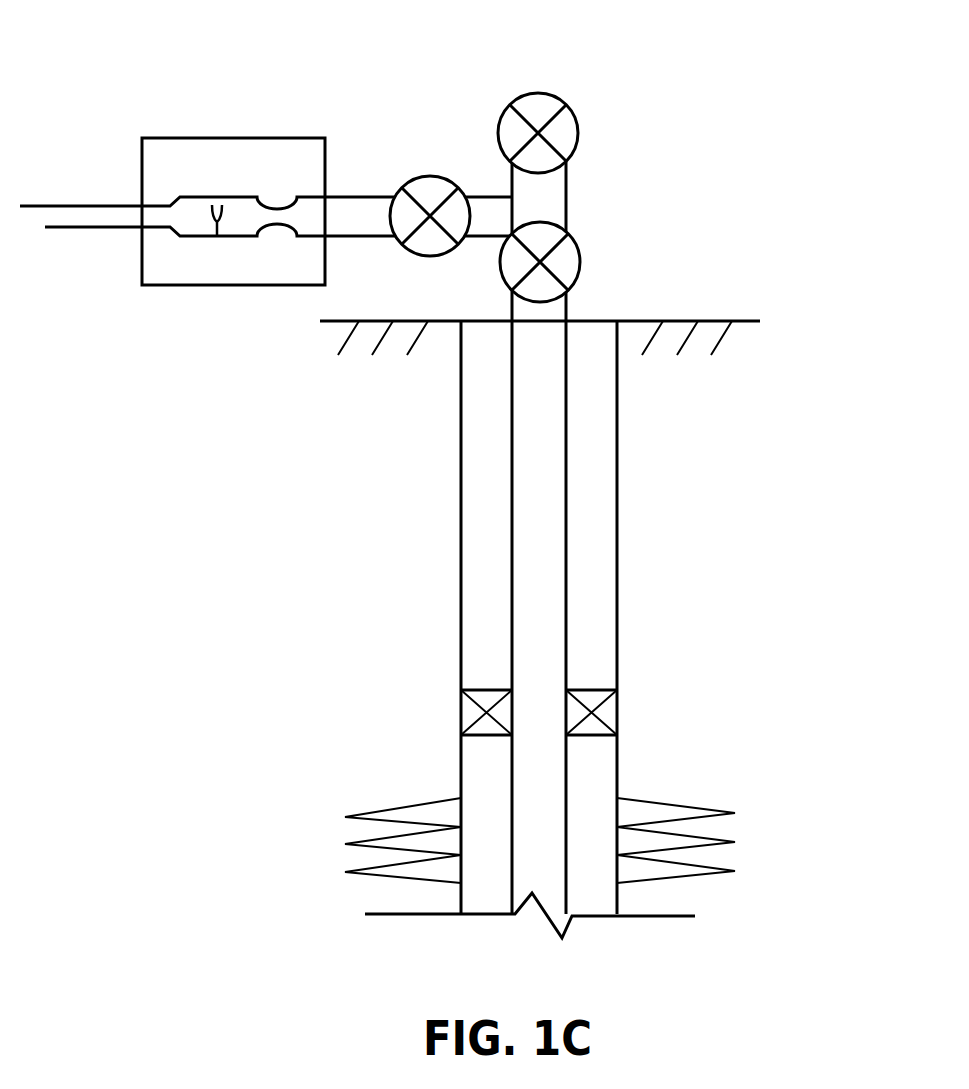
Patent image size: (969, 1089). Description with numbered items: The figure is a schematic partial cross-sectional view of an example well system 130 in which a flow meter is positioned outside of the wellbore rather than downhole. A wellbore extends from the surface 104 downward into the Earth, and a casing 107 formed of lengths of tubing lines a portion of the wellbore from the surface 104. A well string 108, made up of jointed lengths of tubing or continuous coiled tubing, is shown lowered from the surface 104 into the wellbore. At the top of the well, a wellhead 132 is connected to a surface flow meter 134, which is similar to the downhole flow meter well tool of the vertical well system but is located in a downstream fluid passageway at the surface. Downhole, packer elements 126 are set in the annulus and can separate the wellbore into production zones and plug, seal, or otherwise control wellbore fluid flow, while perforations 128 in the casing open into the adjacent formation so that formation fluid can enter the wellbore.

The surface 104 is at (705, 320).
The casing 107 is at (617, 601).
The well string 108 is at (566, 498).
The packer elements 126 is at (617, 709).
The perforations 128 is at (760, 812).
The well system 130 is at (858, 159).
The wellhead 132 is at (586, 133).
The surface flow meter 134 is at (275, 137).